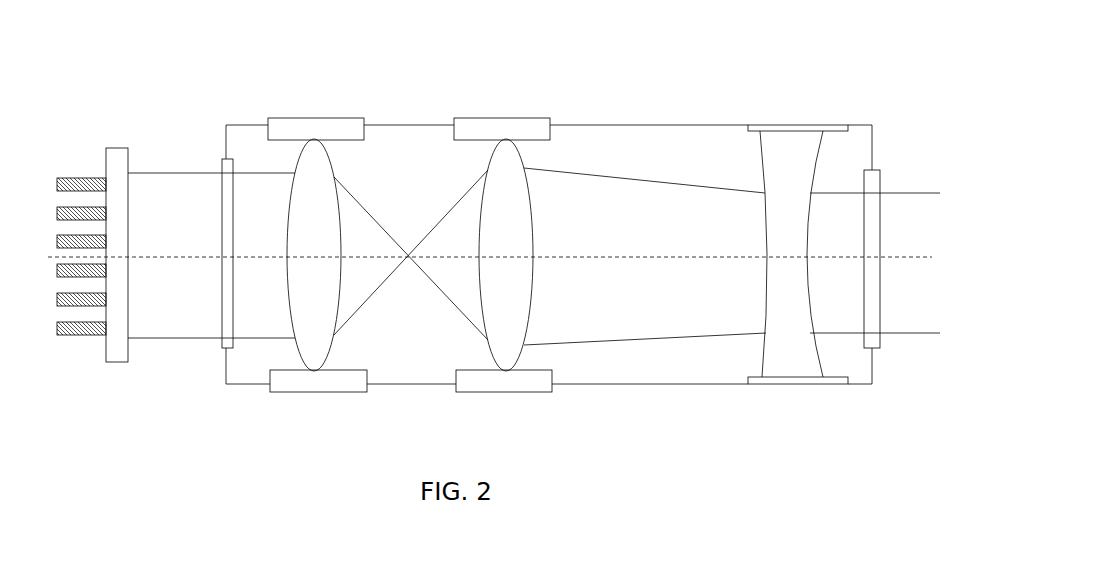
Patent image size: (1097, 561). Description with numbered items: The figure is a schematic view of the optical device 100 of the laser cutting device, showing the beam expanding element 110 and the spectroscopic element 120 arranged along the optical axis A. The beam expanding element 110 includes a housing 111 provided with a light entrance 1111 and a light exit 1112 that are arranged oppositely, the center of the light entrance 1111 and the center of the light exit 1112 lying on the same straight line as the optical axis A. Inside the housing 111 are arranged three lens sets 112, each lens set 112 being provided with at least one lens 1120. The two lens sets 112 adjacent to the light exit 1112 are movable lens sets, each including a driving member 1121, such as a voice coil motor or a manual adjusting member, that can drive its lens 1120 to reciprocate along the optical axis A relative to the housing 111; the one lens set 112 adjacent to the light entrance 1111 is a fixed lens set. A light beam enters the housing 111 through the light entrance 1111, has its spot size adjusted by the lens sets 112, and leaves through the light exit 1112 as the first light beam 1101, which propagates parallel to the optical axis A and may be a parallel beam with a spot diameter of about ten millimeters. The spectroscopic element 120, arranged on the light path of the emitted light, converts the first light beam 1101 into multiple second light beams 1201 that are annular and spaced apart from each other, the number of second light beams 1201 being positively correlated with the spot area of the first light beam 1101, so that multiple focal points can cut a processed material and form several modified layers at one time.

The optical device 100 is at (93, 52).
The beam expanding element 110 is at (228, 125).
The housing 111 is at (658, 125).
The first light beam 1101 is at (191, 338).
The light entrance 1111 is at (873, 200).
The light exit 1112 is at (227, 203).
The lens set 112 is at (443, 55).
The lens 1120 is at (318, 163).
The driving member 1121 is at (282, 127).
The spectroscopic element 120 is at (118, 152).
The second light beams 1201 is at (95, 335).
The optical axis A is at (907, 257).